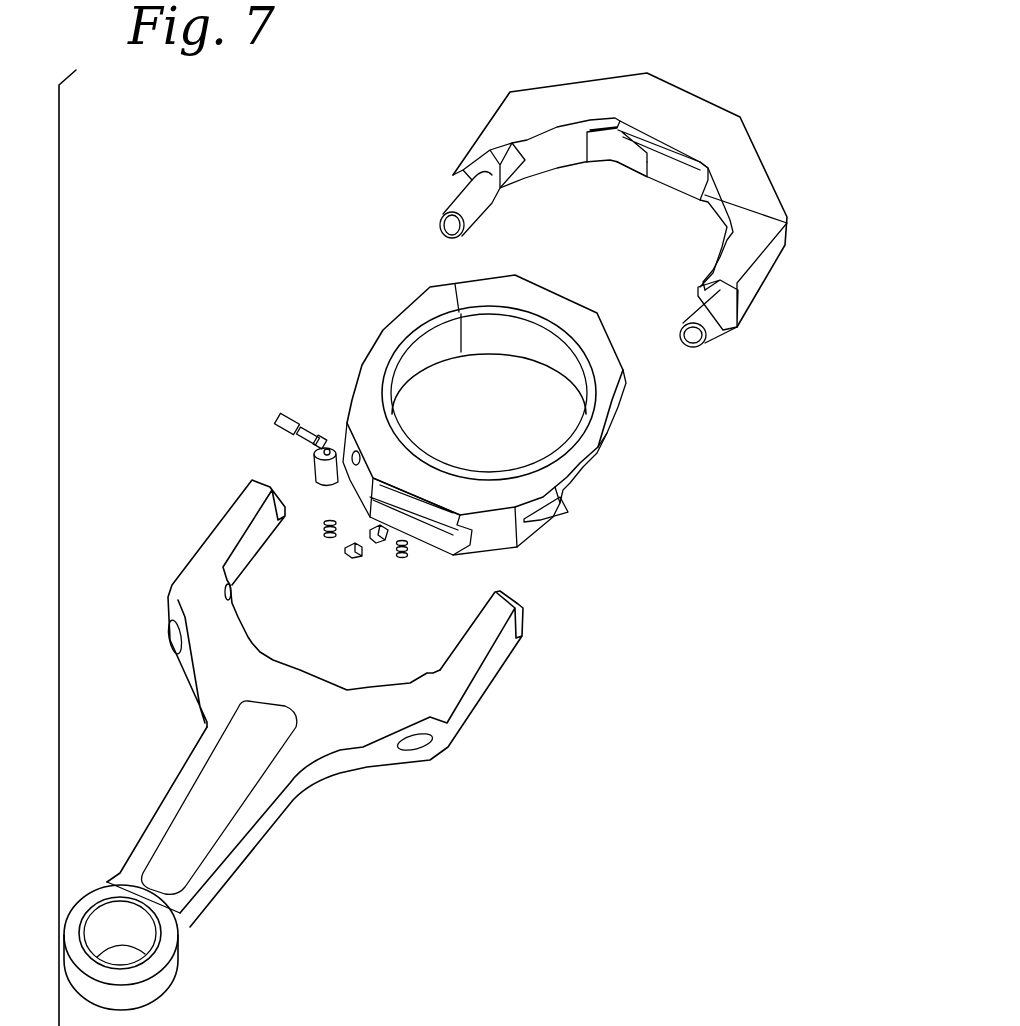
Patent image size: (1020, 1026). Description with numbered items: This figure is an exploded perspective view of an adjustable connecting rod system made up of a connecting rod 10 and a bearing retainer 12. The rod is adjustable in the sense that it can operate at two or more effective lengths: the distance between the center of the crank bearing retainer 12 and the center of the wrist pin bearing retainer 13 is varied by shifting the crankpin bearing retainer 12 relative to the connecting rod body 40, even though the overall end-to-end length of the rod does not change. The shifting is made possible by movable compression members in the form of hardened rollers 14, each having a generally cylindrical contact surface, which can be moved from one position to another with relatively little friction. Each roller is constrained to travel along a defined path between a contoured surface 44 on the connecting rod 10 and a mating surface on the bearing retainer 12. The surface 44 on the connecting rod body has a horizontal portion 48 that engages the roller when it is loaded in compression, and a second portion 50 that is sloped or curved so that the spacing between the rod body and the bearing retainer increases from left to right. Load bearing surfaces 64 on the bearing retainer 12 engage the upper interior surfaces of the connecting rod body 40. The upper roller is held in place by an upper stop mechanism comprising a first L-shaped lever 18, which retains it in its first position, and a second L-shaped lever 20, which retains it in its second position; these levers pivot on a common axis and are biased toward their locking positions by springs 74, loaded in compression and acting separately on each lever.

The connecting rod 10 is at (195, 525).
The bearing retainer 12 is at (383, 333).
The wrist pin bearing retainer 13 is at (158, 950).
The hardened rollers 14 is at (318, 468).
The first L-shaped lever 18 is at (382, 546).
The second L-shaped lever 20 is at (347, 558).
The connecting rod body 40 is at (483, 703).
The contoured surface 44 is at (615, 157).
The horizontal portion 48 is at (660, 178).
The second portion 50 is at (631, 160).
The load bearing surfaces 64 is at (558, 292).
The springs 74 is at (326, 533).